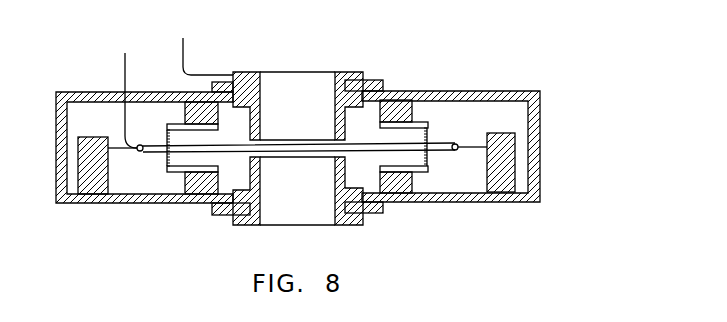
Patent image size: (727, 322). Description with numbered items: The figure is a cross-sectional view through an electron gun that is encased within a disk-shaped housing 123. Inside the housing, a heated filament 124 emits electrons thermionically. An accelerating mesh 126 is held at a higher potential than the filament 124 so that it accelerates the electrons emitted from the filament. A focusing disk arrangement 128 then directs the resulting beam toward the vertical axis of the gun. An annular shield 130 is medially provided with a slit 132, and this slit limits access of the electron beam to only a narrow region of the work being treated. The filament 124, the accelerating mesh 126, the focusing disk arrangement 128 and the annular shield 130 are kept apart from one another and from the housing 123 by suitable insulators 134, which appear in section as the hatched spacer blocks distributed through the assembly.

The housing 123 is at (540, 136).
The heated filament 124 is at (139, 145).
The accelerating mesh 126 is at (167, 163).
The focusing disk arrangement 128 is at (420, 120).
The annular shield 130 is at (259, 106).
The slit 132 is at (318, 140).
The insulators 134 is at (192, 193).